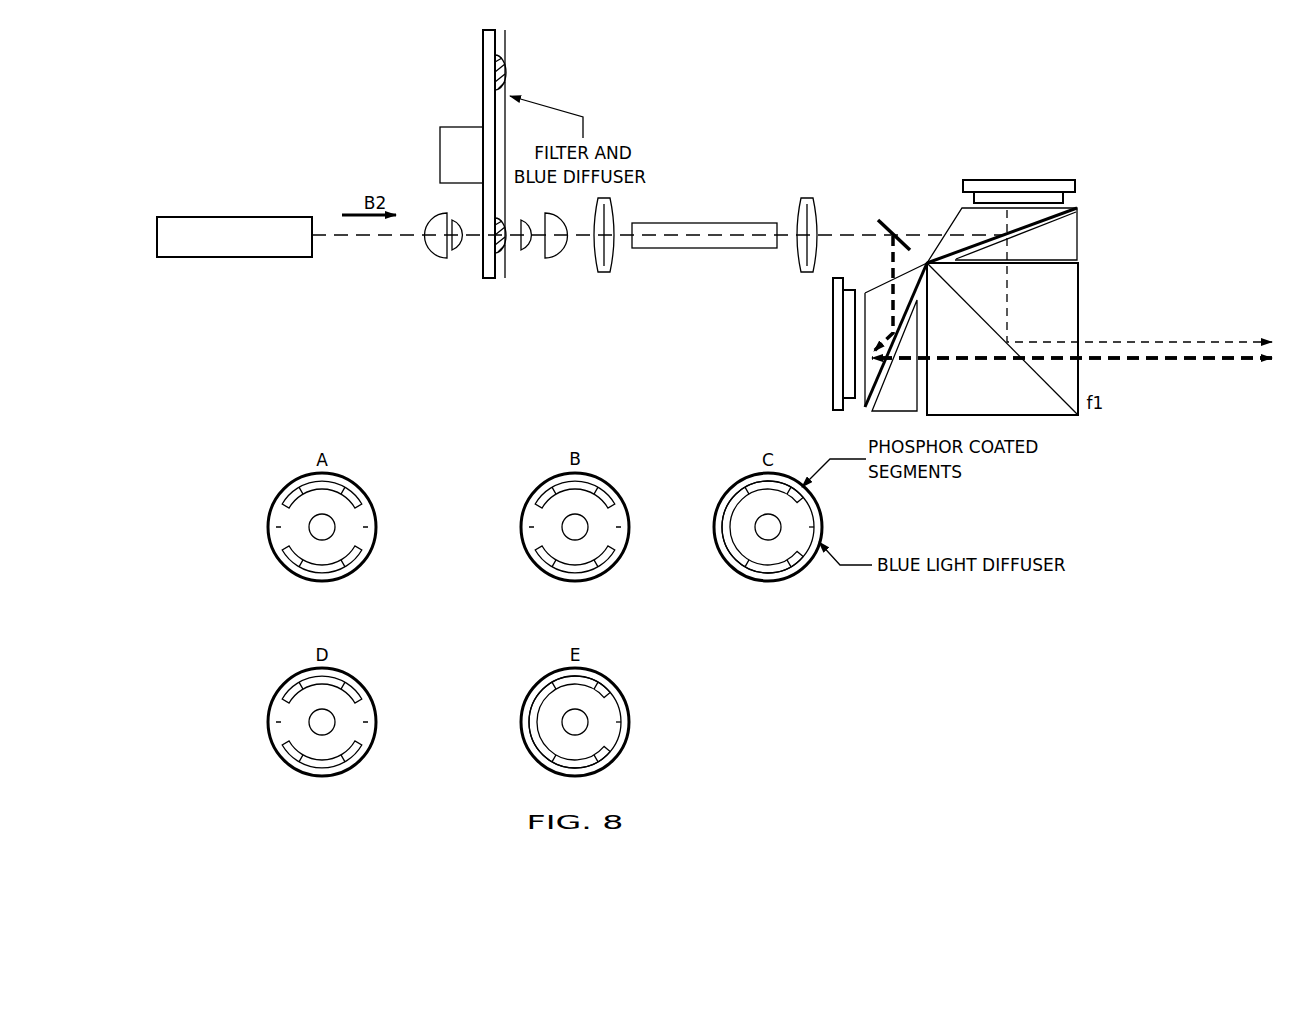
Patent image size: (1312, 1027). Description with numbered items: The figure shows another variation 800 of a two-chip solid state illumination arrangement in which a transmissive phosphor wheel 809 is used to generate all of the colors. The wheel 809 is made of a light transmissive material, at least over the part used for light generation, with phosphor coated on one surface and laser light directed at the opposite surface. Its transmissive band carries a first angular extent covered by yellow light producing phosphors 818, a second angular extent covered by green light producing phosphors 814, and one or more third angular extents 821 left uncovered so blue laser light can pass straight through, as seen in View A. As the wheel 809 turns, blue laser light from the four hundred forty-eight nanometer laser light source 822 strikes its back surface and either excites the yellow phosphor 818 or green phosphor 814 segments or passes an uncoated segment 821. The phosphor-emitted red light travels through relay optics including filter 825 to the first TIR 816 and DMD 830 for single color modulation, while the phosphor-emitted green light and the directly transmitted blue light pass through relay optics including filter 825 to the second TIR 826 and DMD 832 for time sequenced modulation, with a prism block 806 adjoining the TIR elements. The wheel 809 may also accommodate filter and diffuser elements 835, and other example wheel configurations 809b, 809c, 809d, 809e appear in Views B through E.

The two-chip arrangement variation 800 is at (1034, 92).
The 448 nm laser light source 822 is at (157, 228).
The transmissive phosphor wheel 809 is at (483, 70).
The wheel configuration B 809b is at (532, 527).
The wheel configuration C 809c is at (773, 554).
The wheel configuration D 809d is at (279, 722).
The wheel configuration E 809e is at (618, 722).
The filter and diffuser elements 835 is at (506, 52).
The yellow light producing phosphors 818 is at (504, 58).
The green light producing phosphors 814 is at (502, 256).
The uncovered angular extents 821 is at (545, 612).
The filter 825 is at (892, 218).
The first TIR 816 is at (951, 224).
The first DMD 830 is at (1018, 180).
The second TIR 826 is at (872, 293).
The second DMD 832 is at (833, 342).
The prism cube 806 is at (1080, 310).